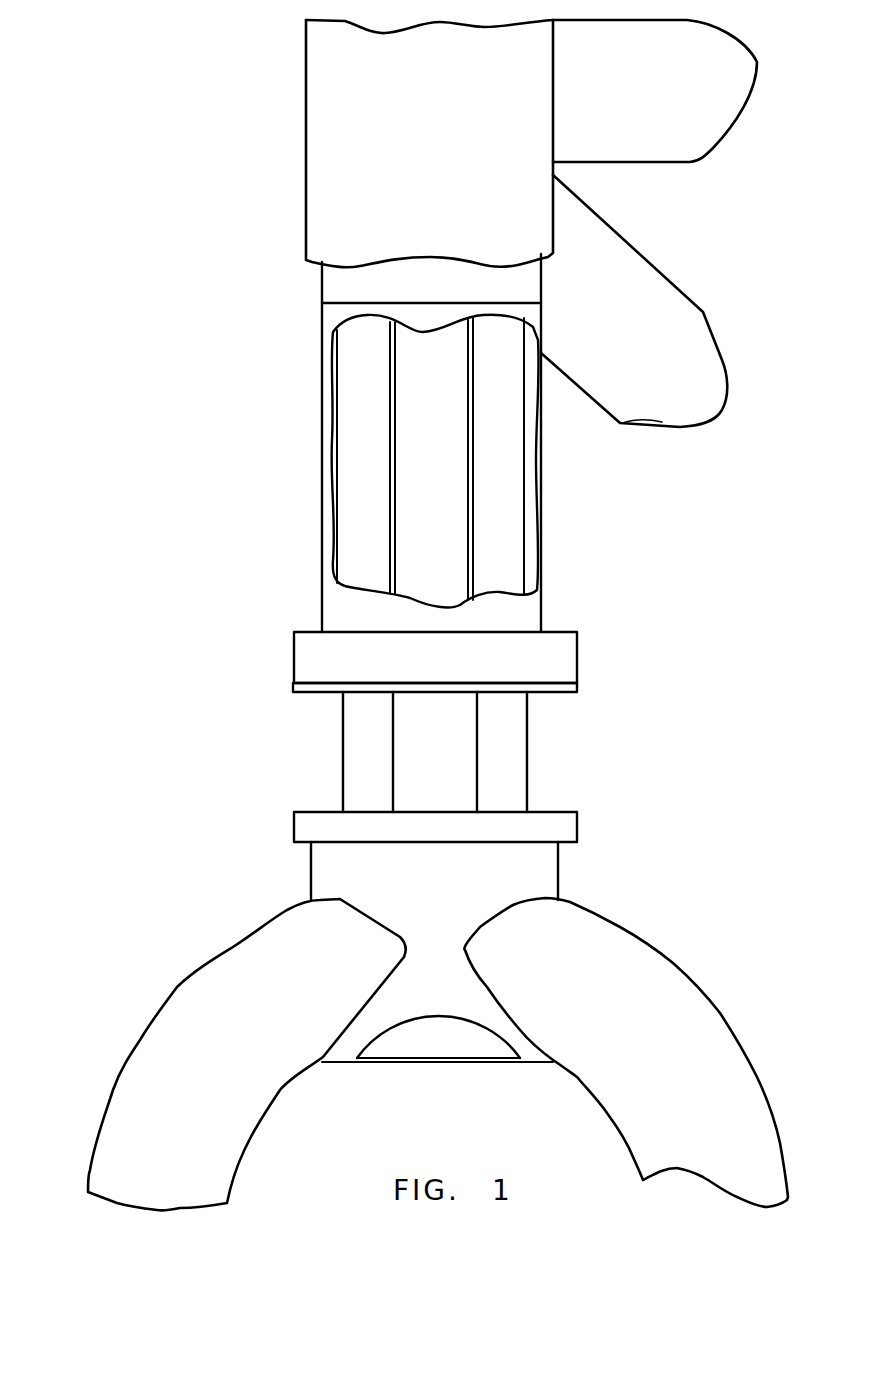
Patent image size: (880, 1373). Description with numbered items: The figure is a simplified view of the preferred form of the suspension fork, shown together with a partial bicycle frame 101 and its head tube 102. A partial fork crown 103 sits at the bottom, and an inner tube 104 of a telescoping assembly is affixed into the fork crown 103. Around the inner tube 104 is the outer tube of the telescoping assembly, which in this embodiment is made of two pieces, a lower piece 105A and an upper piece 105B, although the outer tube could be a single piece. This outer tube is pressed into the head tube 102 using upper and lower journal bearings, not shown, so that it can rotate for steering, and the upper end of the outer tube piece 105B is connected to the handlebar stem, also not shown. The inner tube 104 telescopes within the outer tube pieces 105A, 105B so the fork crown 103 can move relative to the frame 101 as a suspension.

The bicycle frame 101 is at (683, 62).
The head tube 102 is at (338, 151).
The fork crown 103 is at (347, 863).
The inner tube 104 is at (367, 420).
The outer tube lower piece 105A is at (487, 611).
The outer tube upper piece 105B is at (391, 282).